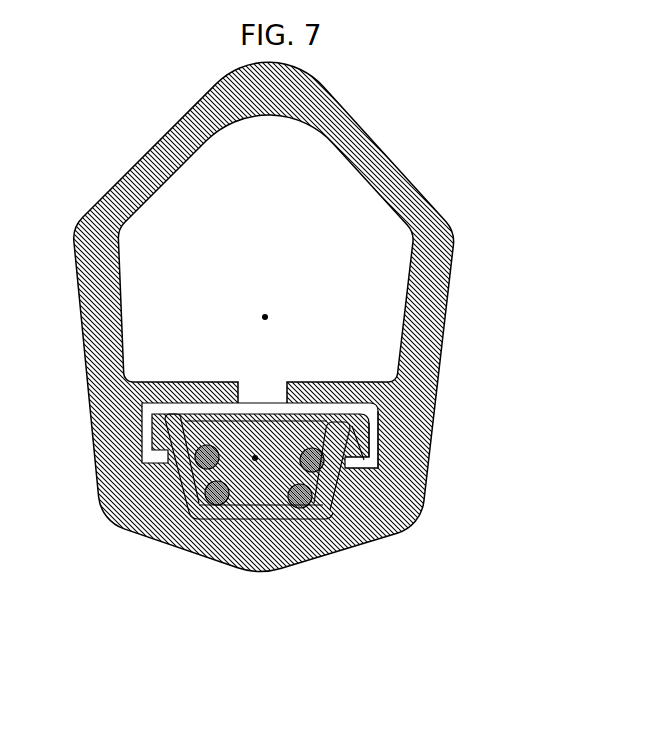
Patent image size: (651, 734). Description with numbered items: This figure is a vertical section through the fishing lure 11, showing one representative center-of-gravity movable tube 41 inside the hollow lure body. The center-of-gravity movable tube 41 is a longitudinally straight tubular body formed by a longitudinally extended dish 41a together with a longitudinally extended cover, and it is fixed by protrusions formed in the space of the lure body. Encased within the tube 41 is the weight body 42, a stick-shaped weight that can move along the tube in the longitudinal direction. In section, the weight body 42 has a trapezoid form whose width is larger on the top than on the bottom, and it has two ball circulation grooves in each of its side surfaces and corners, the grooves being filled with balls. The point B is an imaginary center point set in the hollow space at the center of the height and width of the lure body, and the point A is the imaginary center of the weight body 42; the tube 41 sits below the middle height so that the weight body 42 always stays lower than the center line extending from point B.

The fishing lure 11 is at (415, 145).
The center-of-gravity movable tube 41 is at (186, 510).
The longitudinally extended dish 41a is at (340, 477).
The weight body 42 is at (250, 482).
The center point of the weight body A is at (255, 458).
The center point of the lure body B is at (265, 317).